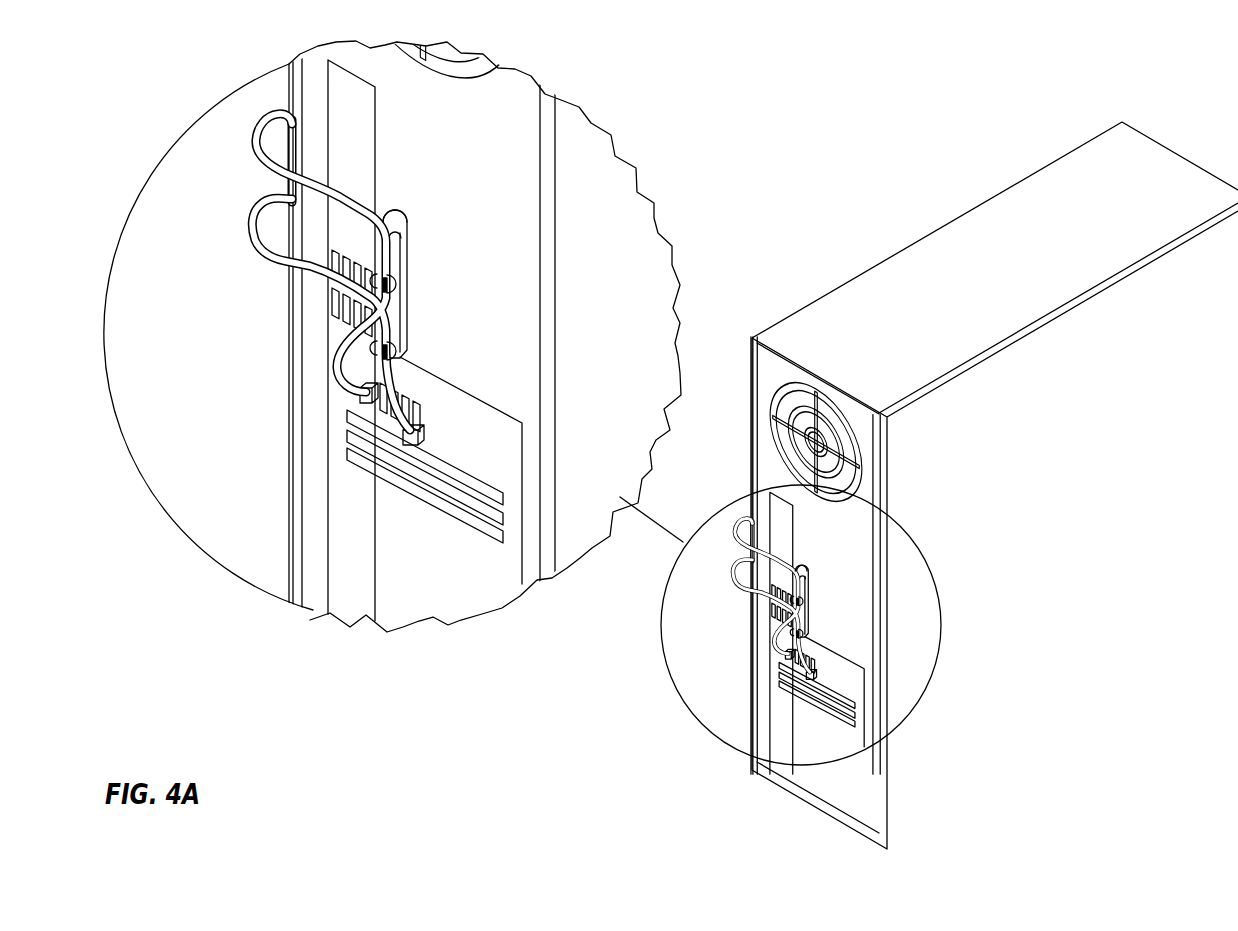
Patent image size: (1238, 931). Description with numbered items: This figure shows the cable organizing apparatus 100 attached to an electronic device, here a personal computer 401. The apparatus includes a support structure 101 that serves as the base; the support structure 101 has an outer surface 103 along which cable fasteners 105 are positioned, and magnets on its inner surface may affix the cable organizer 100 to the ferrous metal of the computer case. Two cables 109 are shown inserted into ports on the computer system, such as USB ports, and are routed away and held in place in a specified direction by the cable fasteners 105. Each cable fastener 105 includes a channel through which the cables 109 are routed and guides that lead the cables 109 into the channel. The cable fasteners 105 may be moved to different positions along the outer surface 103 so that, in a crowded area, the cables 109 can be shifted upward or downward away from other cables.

The cable organizing apparatus 100 is at (430, 183).
The support structure 101 is at (405, 324).
The outer surface 103 is at (392, 307).
The cable fastener 105 is at (395, 284).
The cables 109 is at (349, 208).
The personal computer 401 is at (1050, 712).